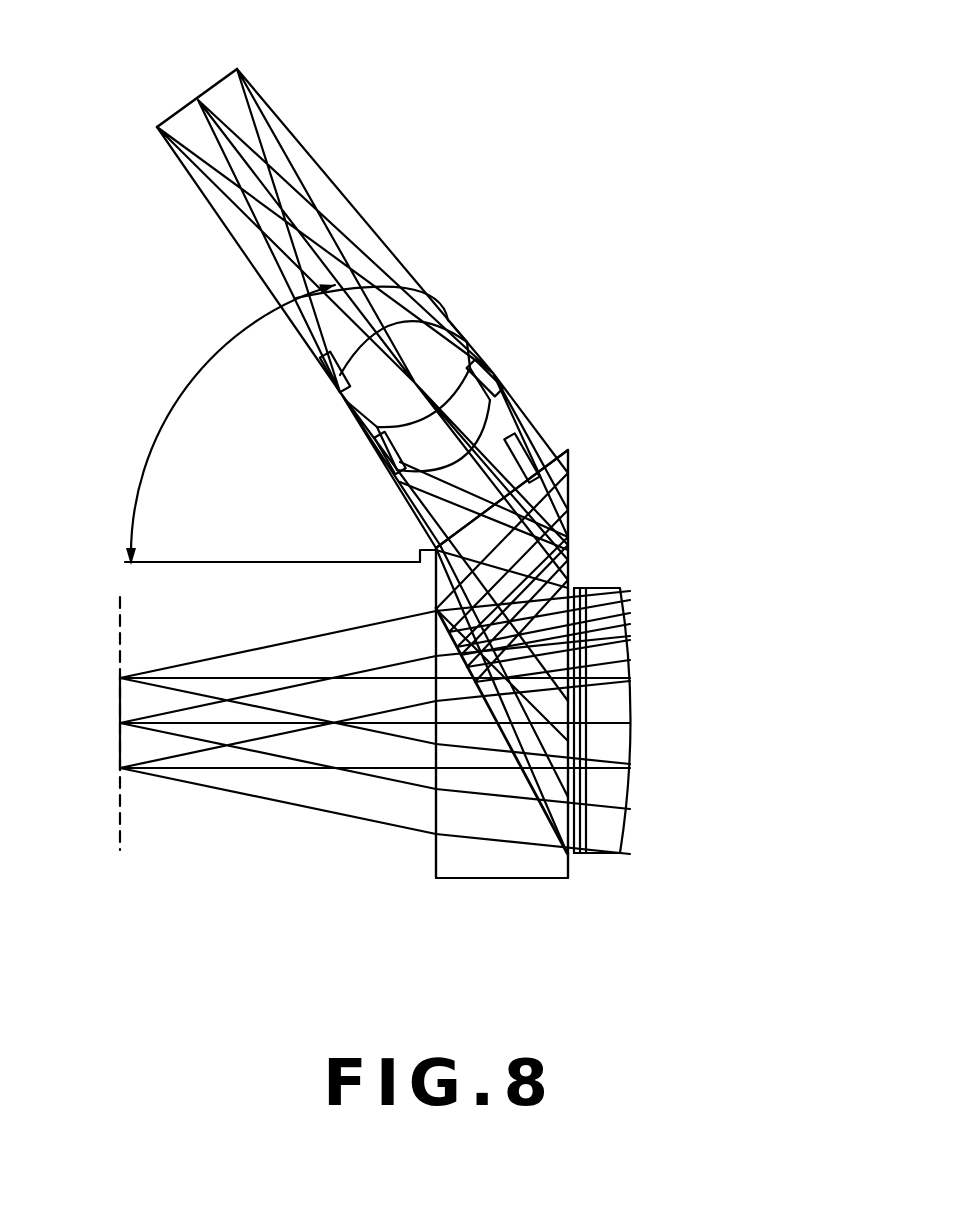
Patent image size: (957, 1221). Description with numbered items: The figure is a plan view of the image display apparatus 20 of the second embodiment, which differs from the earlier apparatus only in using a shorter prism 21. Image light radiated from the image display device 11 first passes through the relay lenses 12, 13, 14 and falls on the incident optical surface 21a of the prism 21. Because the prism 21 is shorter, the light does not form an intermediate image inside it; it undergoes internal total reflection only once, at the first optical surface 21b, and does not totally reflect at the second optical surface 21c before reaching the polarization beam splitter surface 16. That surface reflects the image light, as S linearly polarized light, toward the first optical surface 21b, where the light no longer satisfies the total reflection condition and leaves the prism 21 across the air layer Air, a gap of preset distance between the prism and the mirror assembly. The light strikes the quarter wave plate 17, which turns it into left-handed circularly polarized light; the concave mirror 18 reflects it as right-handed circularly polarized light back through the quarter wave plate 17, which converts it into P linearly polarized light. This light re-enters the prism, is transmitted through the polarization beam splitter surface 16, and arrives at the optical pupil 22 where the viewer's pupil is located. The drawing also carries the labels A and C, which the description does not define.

The image display device 11 is at (209, 100).
The relay lens 12 is at (403, 306).
The relay lens 13 is at (433, 340).
The relay lens 14 is at (478, 393).
The polarization beam splitter surface 16 is at (562, 787).
The quarter wave plate 17 is at (587, 856).
The concave mirror 18 is at (605, 707).
The image display apparatus 20 is at (439, 122).
The prism 21 is at (668, 566).
The incident optical surface 21a is at (558, 451).
The first optical surface 21b is at (569, 490).
The second optical surface 21c is at (436, 588).
The optical pupil 22 is at (112, 606).
The tilt angle A is at (272, 424).
The eye pupil position C is at (585, 758).
The air layer Air is at (568, 857).